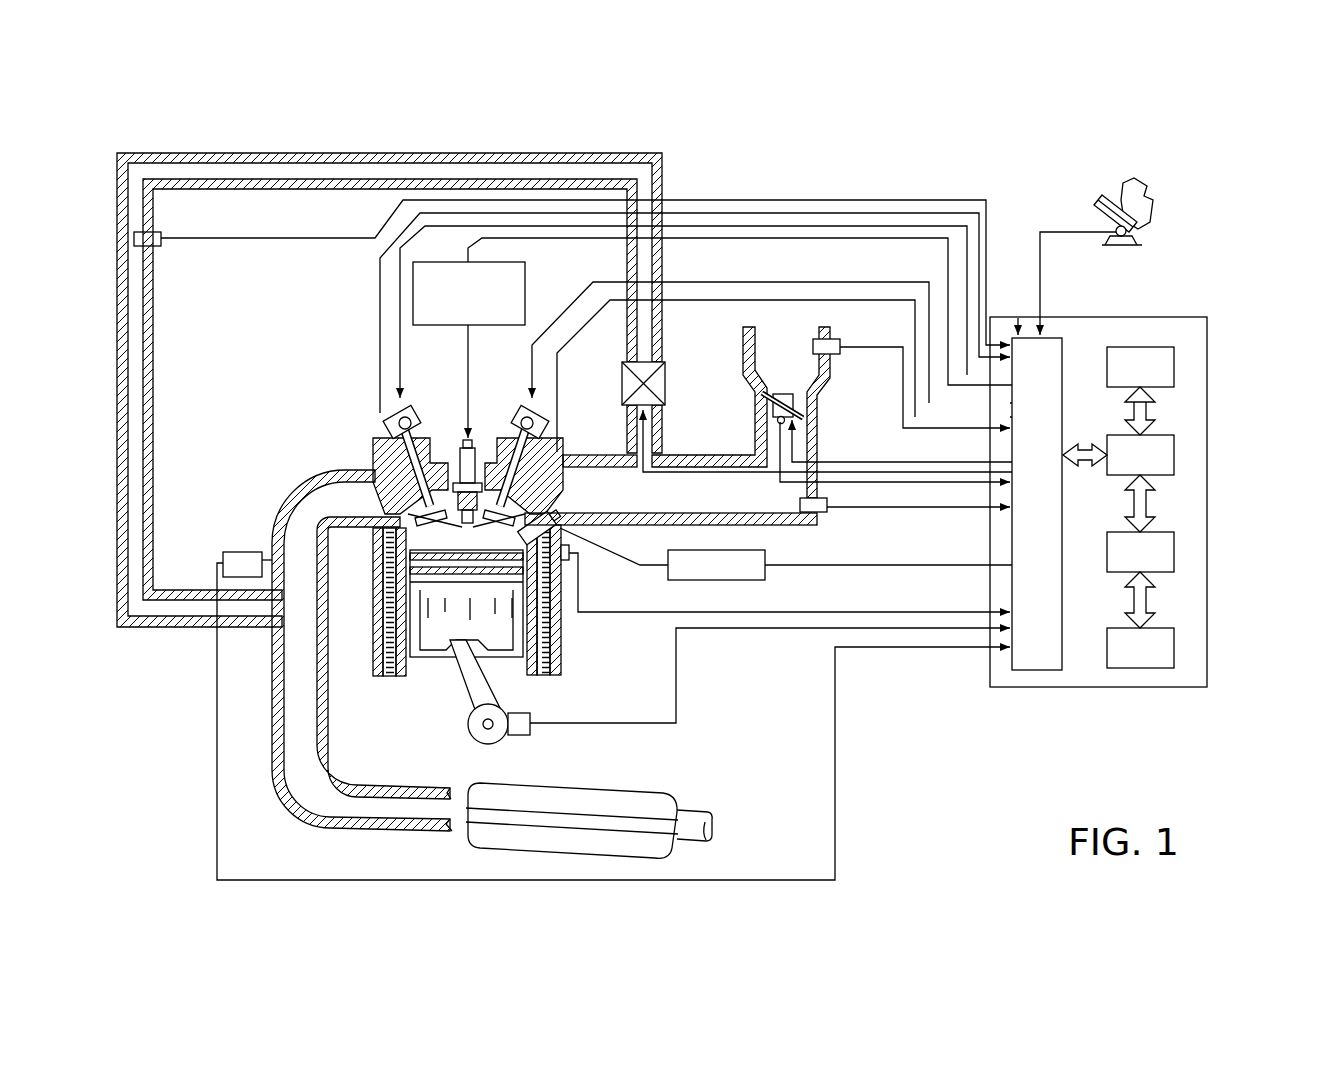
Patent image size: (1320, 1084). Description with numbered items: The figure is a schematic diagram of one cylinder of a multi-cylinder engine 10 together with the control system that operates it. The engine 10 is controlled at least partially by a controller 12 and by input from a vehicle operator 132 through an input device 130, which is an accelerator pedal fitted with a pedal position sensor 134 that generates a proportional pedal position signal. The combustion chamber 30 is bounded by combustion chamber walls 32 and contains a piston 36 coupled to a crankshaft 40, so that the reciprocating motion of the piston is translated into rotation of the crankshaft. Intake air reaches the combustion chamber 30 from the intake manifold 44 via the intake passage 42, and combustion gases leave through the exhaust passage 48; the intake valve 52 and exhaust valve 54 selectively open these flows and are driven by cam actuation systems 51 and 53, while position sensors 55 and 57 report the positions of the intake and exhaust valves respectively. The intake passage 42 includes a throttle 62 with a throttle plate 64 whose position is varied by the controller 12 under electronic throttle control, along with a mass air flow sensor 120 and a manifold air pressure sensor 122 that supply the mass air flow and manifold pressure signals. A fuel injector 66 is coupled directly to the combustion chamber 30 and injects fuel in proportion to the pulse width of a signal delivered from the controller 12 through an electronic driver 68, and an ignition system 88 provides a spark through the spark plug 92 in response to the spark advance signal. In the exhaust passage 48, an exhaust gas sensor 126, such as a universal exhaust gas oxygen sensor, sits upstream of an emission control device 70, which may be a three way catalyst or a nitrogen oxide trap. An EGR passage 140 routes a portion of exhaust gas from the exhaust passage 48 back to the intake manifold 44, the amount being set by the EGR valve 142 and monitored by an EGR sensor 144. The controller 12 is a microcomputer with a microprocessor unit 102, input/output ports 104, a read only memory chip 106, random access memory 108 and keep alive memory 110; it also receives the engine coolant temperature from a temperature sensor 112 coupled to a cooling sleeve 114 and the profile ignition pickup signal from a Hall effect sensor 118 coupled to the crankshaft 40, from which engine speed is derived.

The engine 10 is at (283, 353).
The controller 12 is at (1138, 490).
The combustion chamber 30 is at (385, 626).
The combustion chamber walls 32 is at (418, 666).
The piston 36 is at (450, 640).
The crankshaft 40 is at (475, 745).
The intake passage 42 is at (794, 367).
The intake manifold 44 is at (653, 500).
The exhaust passage 48 is at (351, 507).
The cam actuation system 51 is at (522, 400).
The intake valve 52 is at (530, 507).
The cam actuation system 53 is at (408, 400).
The exhaust valve 54 is at (395, 470).
The position sensor 55 is at (545, 425).
The position sensor 57 is at (390, 420).
The throttle 62 is at (803, 407).
The throttle plate 64 is at (770, 403).
The fuel injector 66 is at (565, 540).
The electronic driver 68 is at (694, 580).
The emission control device 70 is at (637, 790).
The ignition system 88 is at (428, 262).
The spark plug 92 is at (476, 440).
The microprocessor unit 102 is at (1176, 452).
The input/output ports 104 is at (1066, 342).
The read only memory chip 106 is at (1176, 360).
The random access memory 108 is at (1176, 548).
The keep alive memory 110 is at (1176, 645).
The temperature sensor 112 is at (578, 560).
The cooling sleeve 114 is at (562, 635).
The Hall effect sensor 118 is at (520, 736).
The mass air flow sensor 120 is at (834, 339).
The manifold air pressure sensor 122 is at (820, 513).
The exhaust gas sensor 126 is at (223, 556).
The input device 130 is at (1152, 250).
The vehicle operator 132 is at (1158, 195).
The pedal position sensor 134 is at (1135, 232).
The EGR passage 140 is at (379, 153).
The EGR valve 142 is at (665, 385).
The EGR sensor 144 is at (158, 246).